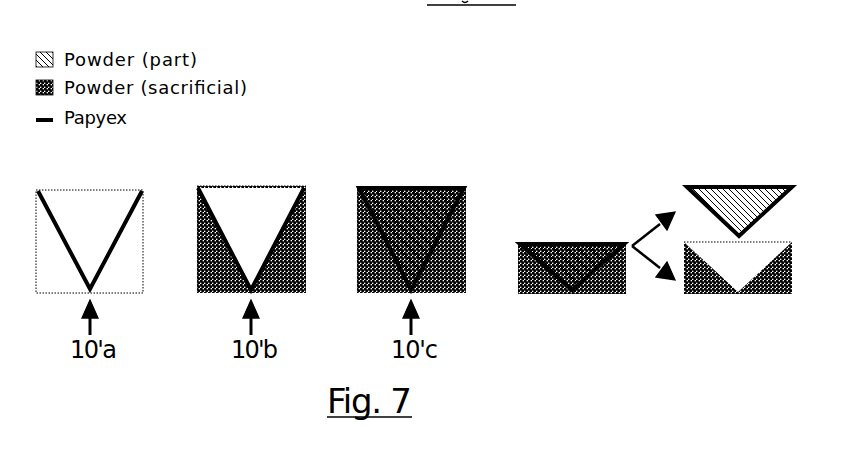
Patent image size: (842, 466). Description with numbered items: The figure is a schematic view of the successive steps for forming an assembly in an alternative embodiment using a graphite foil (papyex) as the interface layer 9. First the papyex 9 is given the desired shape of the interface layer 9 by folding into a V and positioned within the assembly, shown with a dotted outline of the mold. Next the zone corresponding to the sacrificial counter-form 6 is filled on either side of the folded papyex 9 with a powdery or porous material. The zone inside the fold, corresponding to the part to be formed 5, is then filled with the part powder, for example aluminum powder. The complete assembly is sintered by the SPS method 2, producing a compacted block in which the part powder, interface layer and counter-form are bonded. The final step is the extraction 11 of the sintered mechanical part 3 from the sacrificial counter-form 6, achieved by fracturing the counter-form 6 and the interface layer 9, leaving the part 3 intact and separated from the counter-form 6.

The interface layer 9 is at (60, 218).
The sacrificial counter-form 6 is at (297, 222).
The part to be formed 5 is at (427, 222).
The SPS method 2 is at (572, 316).
The mechanical part 3 is at (760, 205).
The extraction 11 is at (746, 252).